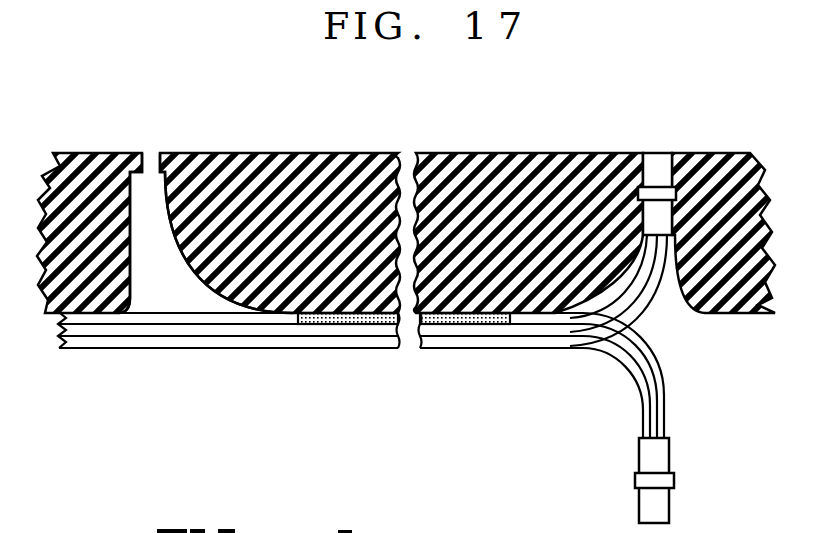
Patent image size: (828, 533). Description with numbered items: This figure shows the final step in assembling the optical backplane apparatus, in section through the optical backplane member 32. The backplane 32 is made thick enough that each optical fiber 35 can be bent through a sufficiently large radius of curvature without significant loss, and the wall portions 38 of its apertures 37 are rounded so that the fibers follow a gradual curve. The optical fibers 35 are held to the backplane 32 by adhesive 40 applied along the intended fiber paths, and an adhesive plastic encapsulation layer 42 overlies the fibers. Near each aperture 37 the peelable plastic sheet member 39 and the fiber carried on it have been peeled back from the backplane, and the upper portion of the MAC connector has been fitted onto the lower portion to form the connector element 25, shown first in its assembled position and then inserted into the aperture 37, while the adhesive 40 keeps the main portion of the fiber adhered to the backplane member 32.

The MAC connector 25 is at (657, 152).
The optical backplane member 32 is at (292, 152).
The optical fiber 35 is at (432, 332).
The aperture 37 is at (147, 152).
The wall portion 38 is at (203, 284).
The peelable plastic sheet member 39 is at (660, 418).
The adhesive 40 is at (322, 325).
The encapsulation layer 42 is at (513, 345).